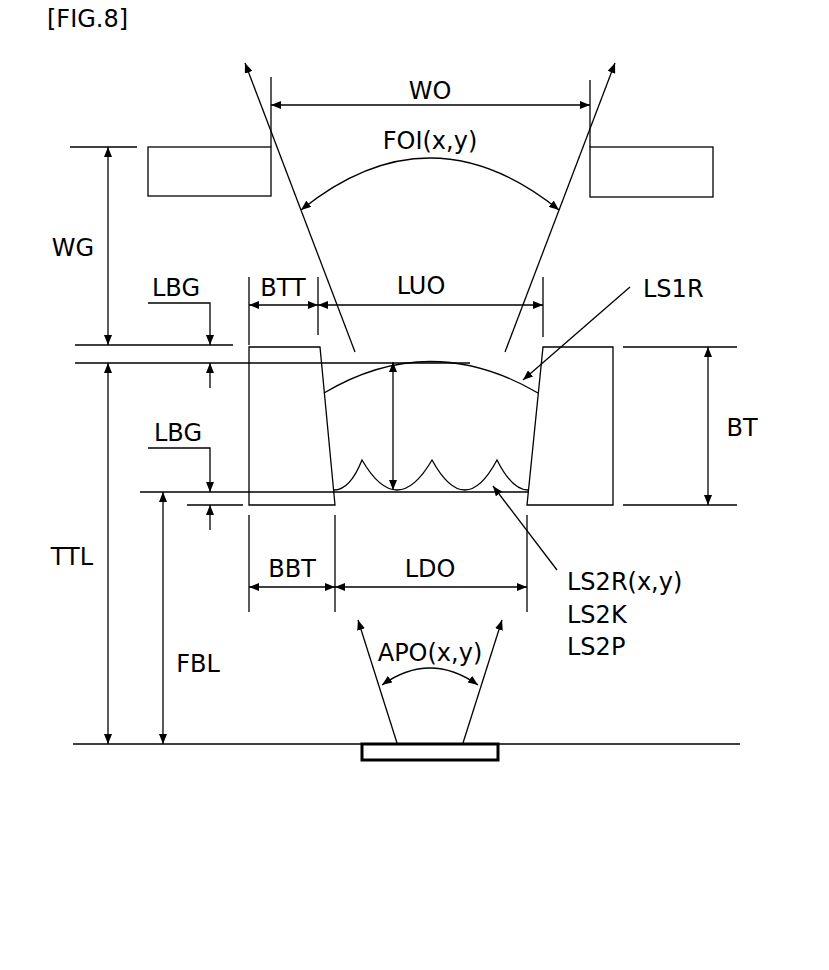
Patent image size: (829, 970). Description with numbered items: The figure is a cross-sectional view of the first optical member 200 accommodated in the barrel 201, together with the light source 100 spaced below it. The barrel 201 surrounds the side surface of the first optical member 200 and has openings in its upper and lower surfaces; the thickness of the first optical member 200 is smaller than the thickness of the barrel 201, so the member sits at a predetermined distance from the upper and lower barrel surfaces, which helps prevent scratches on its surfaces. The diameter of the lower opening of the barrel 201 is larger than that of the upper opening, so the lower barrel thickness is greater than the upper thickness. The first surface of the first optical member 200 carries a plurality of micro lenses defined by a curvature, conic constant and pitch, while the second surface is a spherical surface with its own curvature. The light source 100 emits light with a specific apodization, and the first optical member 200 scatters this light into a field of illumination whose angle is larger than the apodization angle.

The light source 100 is at (427, 761).
The first optical member 200 is at (470, 363).
The barrel 201 is at (597, 480).